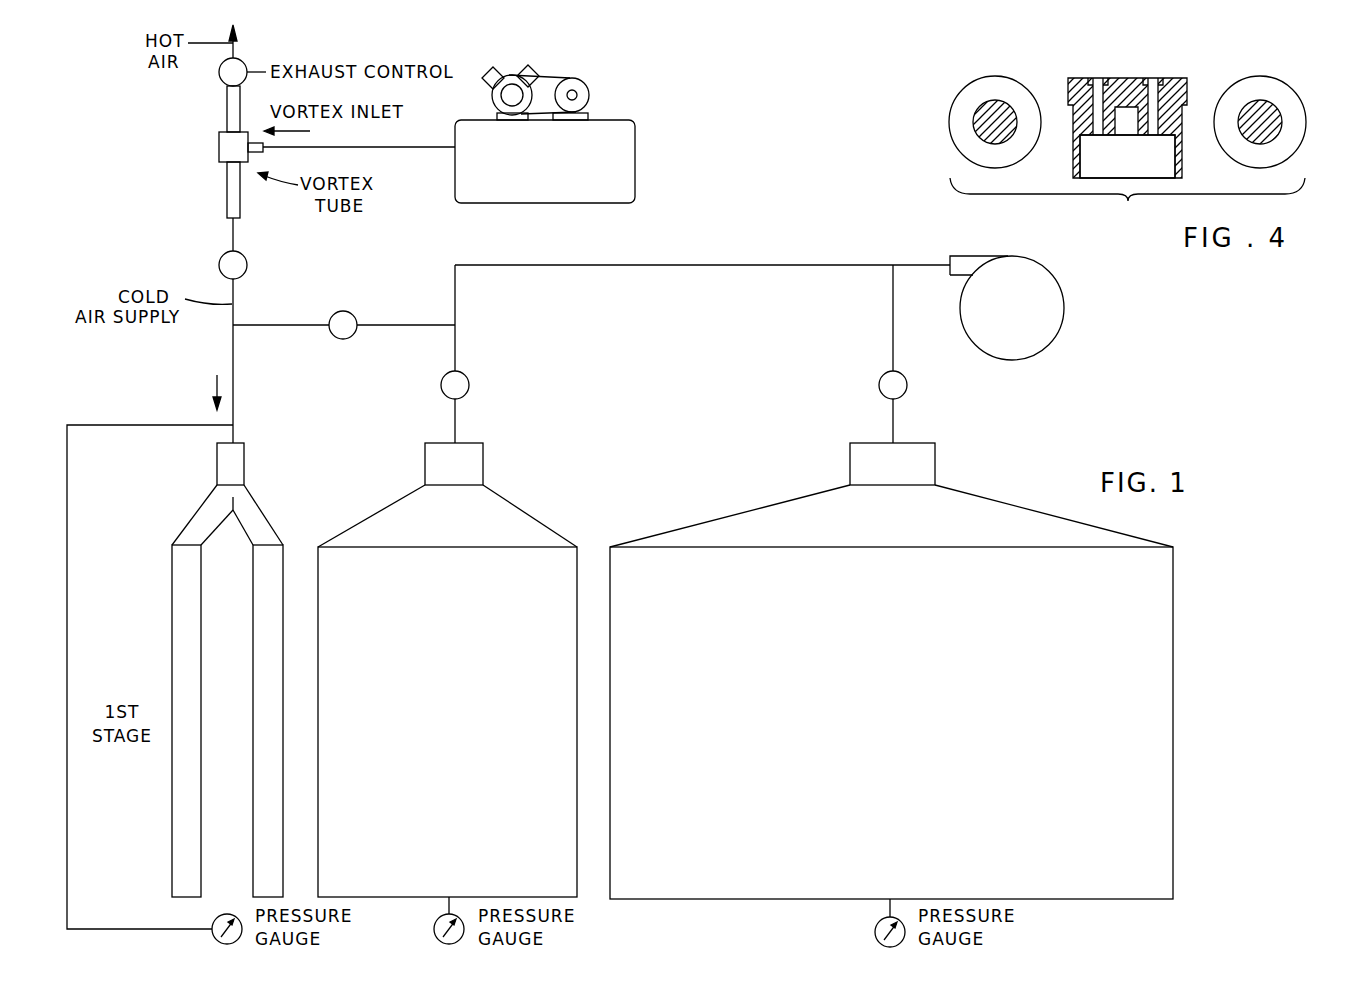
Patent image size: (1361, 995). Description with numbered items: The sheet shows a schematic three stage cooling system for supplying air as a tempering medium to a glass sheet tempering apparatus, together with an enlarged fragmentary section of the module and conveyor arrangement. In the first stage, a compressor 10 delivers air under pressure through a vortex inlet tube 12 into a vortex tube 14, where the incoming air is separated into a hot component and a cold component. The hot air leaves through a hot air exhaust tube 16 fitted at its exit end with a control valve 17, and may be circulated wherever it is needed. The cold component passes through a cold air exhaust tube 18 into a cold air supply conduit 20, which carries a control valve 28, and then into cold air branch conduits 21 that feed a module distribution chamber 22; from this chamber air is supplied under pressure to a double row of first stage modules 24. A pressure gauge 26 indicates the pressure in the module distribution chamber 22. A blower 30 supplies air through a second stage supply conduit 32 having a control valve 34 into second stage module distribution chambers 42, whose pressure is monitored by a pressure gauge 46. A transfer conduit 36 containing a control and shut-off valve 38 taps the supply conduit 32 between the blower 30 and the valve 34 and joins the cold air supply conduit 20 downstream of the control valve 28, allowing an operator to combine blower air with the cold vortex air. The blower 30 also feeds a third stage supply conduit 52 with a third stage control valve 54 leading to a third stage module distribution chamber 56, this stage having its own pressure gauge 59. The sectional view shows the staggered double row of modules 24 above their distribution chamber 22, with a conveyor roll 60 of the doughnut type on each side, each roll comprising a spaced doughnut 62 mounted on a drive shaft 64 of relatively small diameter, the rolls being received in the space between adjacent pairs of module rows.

In FIG. 1, the compressor 10 is at (506, 76).
In FIG. 1, the vortex inlet tube 12 is at (258, 154).
In FIG. 1, the vortex tube 14 is at (215, 151).
In FIG. 1, the hot air exhaust tube 16 is at (227, 90).
In FIG. 1, the control valve 17 is at (232, 58).
In FIG. 1, the cold air exhaust tube 18 is at (227, 204).
In FIG. 1, the cold air supply conduit 20 is at (235, 234).
In FIG. 1, the cold air branch conduit 21 is at (194, 516).
In FIG. 1, the module distribution chamber 22 is at (254, 721).
In FIG. 4, the module distribution chamber 22 is at (1150, 169).
In FIG. 4, the first stage module 24 is at (1158, 77).
In FIG. 1, the pressure gauge 26 is at (154, 697).
In FIG. 1, the control valve 28 is at (246, 272).
In FIG. 1, the blower 30 is at (1060, 327).
In FIG. 1, the second stage supply conduit 32 is at (455, 306).
In FIG. 1, the control valve 34 is at (468, 392).
In FIG. 1, the transfer conduit 36 is at (405, 325).
In FIG. 1, the control and shut-off valve 38 is at (343, 311).
In FIG. 1, the second stage module distribution chamber 42 is at (578, 565).
In FIG. 1, the pressure gauge 46 is at (433, 929).
In FIG. 1, the third stage supply conduit 52 is at (893, 328).
In FIG. 1, the third stage control valve 54 is at (907, 392).
In FIG. 1, the third stage module distribution chamber 56 is at (1173, 687).
In FIG. 1, the pressure gauge 59 is at (875, 931).
In FIG. 4, the conveyor roll 60 is at (1308, 138).
In FIG. 4, the doughnut 62 is at (1010, 78).
In FIG. 4, the drive shaft 64 is at (975, 115).